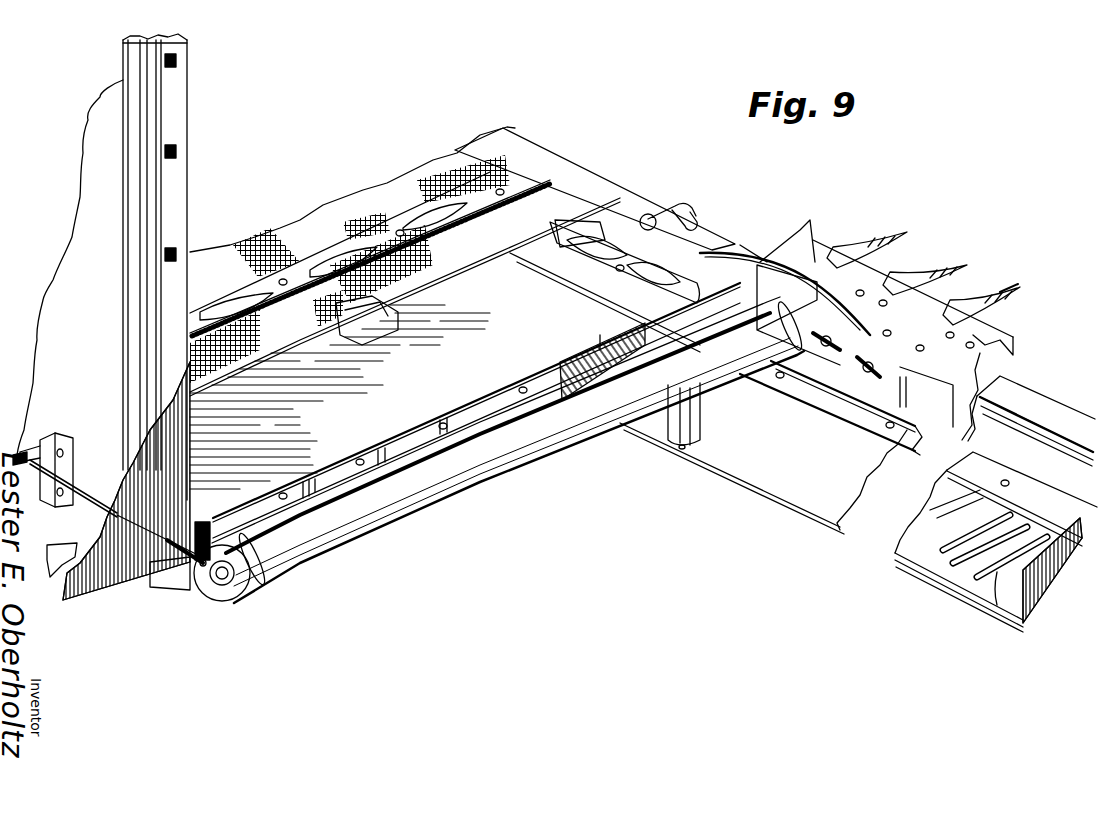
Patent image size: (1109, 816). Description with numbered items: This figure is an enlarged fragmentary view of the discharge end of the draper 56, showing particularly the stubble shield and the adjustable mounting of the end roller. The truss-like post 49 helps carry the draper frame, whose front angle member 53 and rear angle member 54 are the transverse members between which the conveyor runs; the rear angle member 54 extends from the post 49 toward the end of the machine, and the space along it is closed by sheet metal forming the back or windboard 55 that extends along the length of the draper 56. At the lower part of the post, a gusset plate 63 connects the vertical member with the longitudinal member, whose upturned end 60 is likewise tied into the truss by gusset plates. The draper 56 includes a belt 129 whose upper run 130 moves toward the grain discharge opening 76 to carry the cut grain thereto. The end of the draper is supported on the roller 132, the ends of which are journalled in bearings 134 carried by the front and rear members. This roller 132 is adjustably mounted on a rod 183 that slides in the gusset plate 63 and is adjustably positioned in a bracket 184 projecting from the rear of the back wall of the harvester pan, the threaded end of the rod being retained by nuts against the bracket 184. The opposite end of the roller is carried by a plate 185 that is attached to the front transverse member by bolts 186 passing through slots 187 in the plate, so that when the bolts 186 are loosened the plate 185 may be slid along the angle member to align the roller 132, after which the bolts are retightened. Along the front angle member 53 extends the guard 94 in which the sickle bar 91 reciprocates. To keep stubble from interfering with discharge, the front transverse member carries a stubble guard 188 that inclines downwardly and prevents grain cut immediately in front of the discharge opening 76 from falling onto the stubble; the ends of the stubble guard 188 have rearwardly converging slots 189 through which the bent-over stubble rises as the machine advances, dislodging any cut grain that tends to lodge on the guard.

The post 49 is at (172, 103).
The back or windboard 55 is at (72, 287).
The upper run 130 is at (237, 267).
The bracket 184 is at (60, 437).
The gusset plate 63 is at (110, 503).
The upturned end 60 is at (65, 548).
The rear angle member 54 is at (175, 577).
The rod 183 is at (200, 575).
The bearing 134 is at (233, 600).
The grain discharge opening 76 is at (513, 513).
The roller 132 is at (530, 467).
The front angle member 53 is at (620, 323).
The draper 56 is at (460, 273).
The belt 129 is at (500, 263).
The rearwardly converging slots 189 is at (673, 450).
The stubble guard 188 is at (743, 467).
The plate 185 is at (840, 337).
The slots 187 is at (870, 365).
The bolts 186 is at (945, 313).
The guard 94 is at (1010, 297).
The sickle bar 91 is at (987, 347).